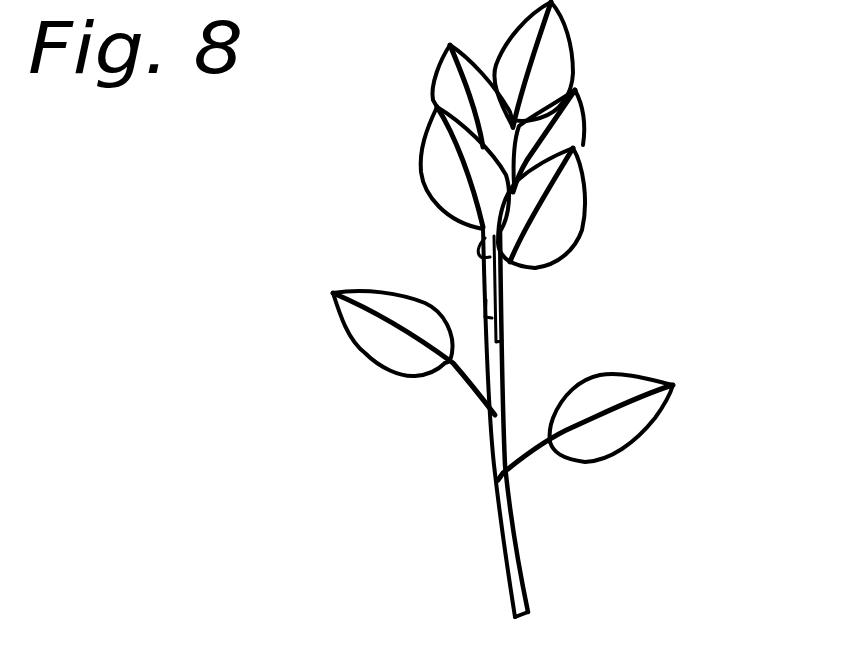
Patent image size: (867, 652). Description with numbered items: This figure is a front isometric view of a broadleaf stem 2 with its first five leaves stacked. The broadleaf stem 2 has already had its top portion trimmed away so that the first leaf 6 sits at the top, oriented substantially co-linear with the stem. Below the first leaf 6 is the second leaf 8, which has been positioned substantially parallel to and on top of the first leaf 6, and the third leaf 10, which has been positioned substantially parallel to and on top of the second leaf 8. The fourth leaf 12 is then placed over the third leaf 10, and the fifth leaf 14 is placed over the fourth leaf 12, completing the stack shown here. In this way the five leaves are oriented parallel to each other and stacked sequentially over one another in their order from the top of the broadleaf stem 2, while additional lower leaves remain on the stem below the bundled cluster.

The broadleaf stem 2 is at (177, 201).
The first leaf 6 is at (573, 71).
The second leaf 8 is at (436, 77).
The third leaf 10 is at (583, 138).
The fourth leaf 12 is at (420, 160).
The fifth leaf 14 is at (583, 214).